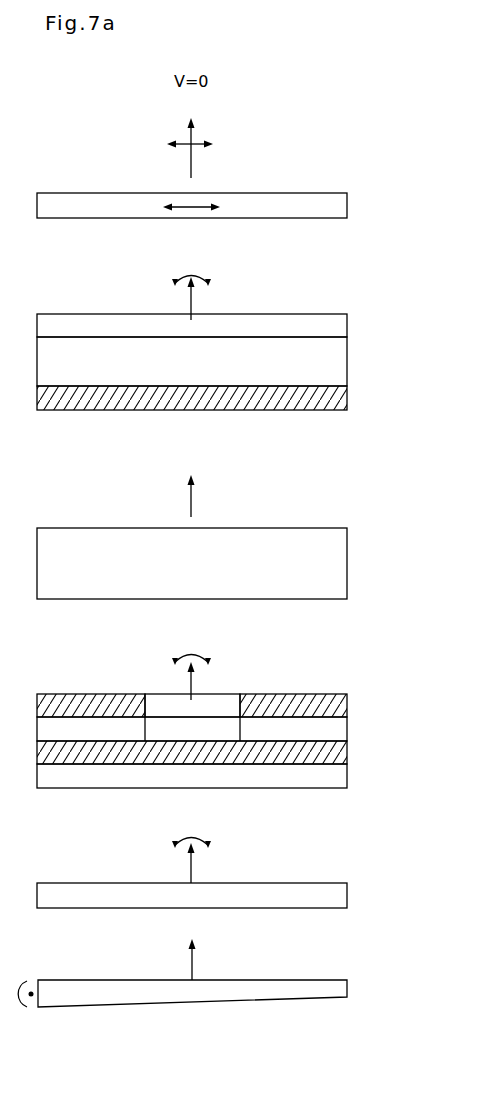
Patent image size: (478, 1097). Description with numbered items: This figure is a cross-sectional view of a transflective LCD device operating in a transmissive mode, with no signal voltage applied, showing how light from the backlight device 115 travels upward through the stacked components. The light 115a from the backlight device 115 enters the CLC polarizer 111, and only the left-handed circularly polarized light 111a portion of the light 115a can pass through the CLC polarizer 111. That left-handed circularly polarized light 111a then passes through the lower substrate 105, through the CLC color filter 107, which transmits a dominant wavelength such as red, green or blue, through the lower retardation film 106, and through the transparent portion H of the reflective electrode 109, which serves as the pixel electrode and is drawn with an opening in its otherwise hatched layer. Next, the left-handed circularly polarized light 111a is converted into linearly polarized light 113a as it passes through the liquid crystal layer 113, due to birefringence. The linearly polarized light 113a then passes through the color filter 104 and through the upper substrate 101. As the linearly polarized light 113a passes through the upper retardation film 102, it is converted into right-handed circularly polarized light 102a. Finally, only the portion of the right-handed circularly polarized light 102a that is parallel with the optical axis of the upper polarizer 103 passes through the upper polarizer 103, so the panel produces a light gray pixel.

The upper polarizer 103 is at (347, 208).
The right-handed circularly polarized light 102a is at (176, 281).
The upper retardation film 102 is at (347, 326).
The upper substrate 101 is at (347, 365).
The color filter 104 is at (347, 402).
The linearly polarized light 113a is at (193, 500).
The liquid crystal layer 113 is at (347, 567).
The transparent portion H is at (160, 700).
The left-handed circularly polarized light 111a is at (208, 660).
The reflective electrode 109 is at (347, 707).
The lower retardation film 106 is at (347, 732).
The CLC color filter 107 is at (347, 755).
The lower substrate 105 is at (347, 781).
The CLC polarizer 111 is at (347, 896).
The light 115a is at (195, 962).
The backlight device 115 is at (347, 990).